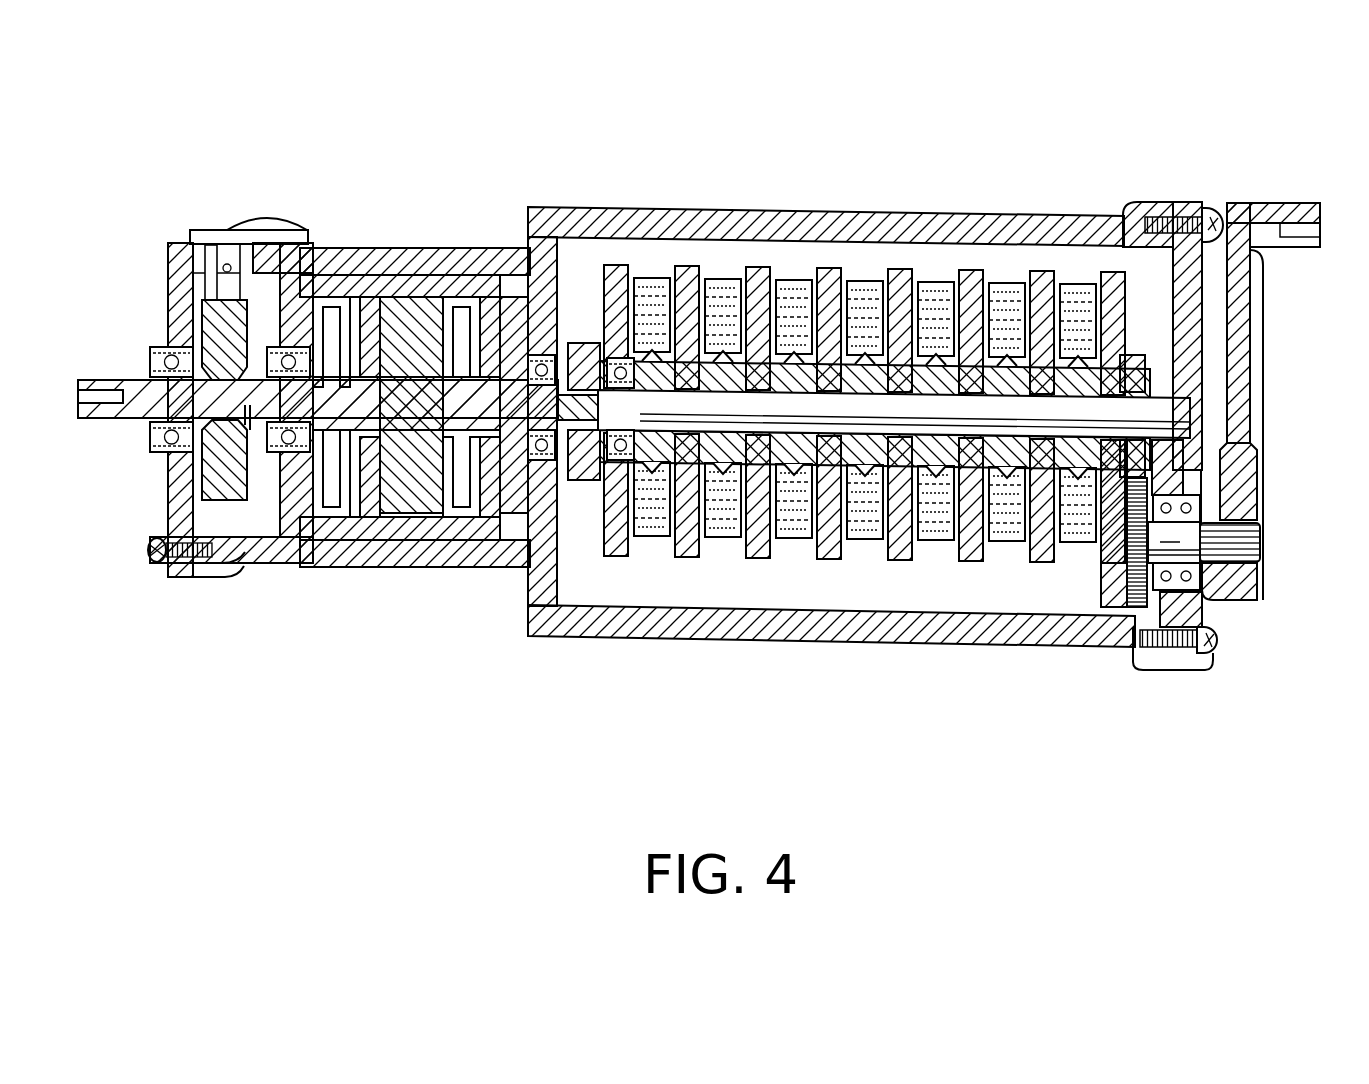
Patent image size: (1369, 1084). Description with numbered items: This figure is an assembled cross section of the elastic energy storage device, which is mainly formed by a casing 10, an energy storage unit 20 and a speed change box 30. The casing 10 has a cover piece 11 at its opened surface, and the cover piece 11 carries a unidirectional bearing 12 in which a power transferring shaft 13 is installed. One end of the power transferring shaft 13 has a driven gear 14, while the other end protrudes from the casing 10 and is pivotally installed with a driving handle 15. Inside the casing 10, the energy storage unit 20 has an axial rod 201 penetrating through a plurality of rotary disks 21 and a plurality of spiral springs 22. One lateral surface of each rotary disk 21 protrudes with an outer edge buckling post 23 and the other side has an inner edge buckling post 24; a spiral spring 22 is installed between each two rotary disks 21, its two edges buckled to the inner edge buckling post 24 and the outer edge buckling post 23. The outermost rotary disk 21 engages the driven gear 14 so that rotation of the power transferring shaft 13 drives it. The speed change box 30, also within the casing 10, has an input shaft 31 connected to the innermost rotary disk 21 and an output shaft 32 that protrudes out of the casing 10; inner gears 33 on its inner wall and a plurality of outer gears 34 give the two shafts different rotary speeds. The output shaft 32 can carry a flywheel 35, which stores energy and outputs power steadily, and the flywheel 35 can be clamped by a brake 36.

The casing 10 is at (947, 225).
The cover piece 11 is at (1185, 200).
The unidirectional bearing 12 is at (1207, 587).
The power transferring shaft 13 is at (1260, 537).
The driven gear 14 is at (1127, 593).
The driving handle 15 is at (1267, 318).
The energy storage unit 20 is at (821, 352).
The axial rod 201 is at (1185, 414).
The rotary disk 21 is at (893, 265).
The spiral spring 22 is at (648, 548).
The outer edge buckling post 23 is at (638, 290).
The inner edge buckling post 24 is at (705, 558).
The speed change box 30 is at (398, 247).
The input shaft 31 is at (535, 560).
The output shaft 32 is at (128, 378).
The inner gear 33 is at (330, 525).
The outer gear 34 is at (483, 250).
The flywheel 35 is at (215, 330).
The brake 36 is at (260, 218).